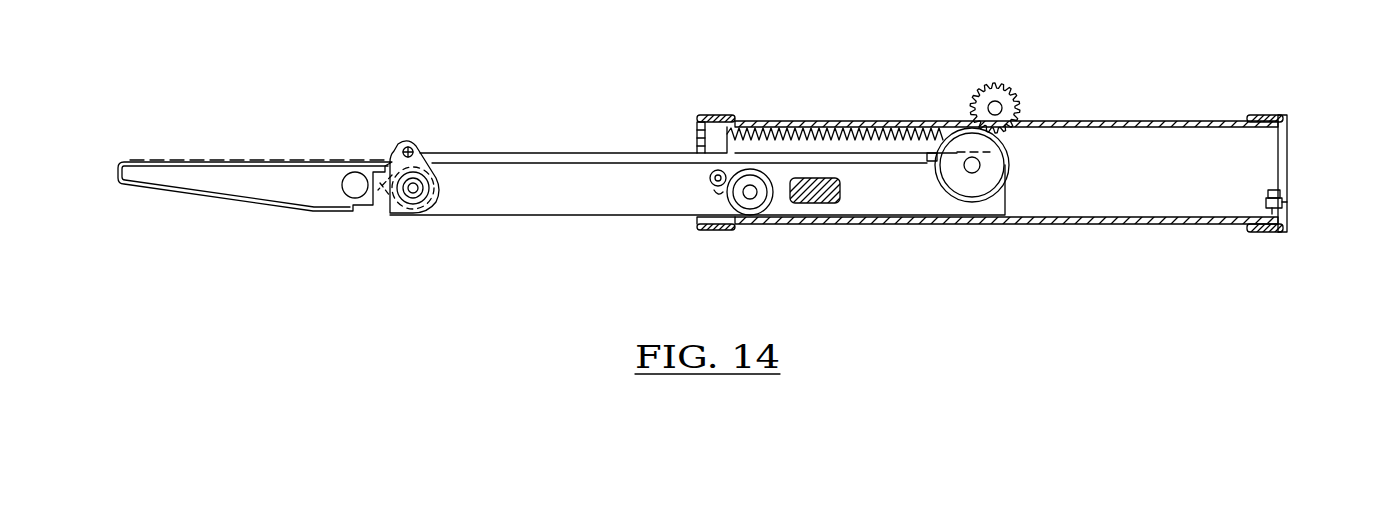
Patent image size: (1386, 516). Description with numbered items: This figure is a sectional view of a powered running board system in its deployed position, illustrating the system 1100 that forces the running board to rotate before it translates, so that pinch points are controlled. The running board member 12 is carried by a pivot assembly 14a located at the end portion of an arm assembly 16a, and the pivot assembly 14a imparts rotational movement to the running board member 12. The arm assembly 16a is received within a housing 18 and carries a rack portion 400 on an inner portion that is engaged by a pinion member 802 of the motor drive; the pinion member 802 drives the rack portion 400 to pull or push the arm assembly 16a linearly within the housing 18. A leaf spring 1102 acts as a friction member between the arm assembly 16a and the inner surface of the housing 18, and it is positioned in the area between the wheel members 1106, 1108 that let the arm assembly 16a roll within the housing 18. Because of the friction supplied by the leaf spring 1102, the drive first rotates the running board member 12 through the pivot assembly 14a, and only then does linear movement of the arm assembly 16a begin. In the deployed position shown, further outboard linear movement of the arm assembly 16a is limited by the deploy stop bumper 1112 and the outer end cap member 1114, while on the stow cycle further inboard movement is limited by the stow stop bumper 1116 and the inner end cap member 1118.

The system 1100 is at (593, 78).
The running board member 12 is at (180, 198).
The pivot assembly 14a is at (437, 198).
The arm assembly 16a is at (578, 217).
The housing 18 is at (840, 122).
The rack portion 400 is at (883, 148).
The pinion member 802 is at (1022, 104).
The leaf spring 1102 is at (842, 193).
The wheel member 1106 is at (777, 198).
The wheel member 1108 is at (1010, 180).
The deploy stop bumper 1112 is at (710, 178).
The outer end cap member 1114 is at (712, 113).
The stow stop bumper 1116 is at (1285, 232).
The inner end cap member 1118 is at (1285, 118).